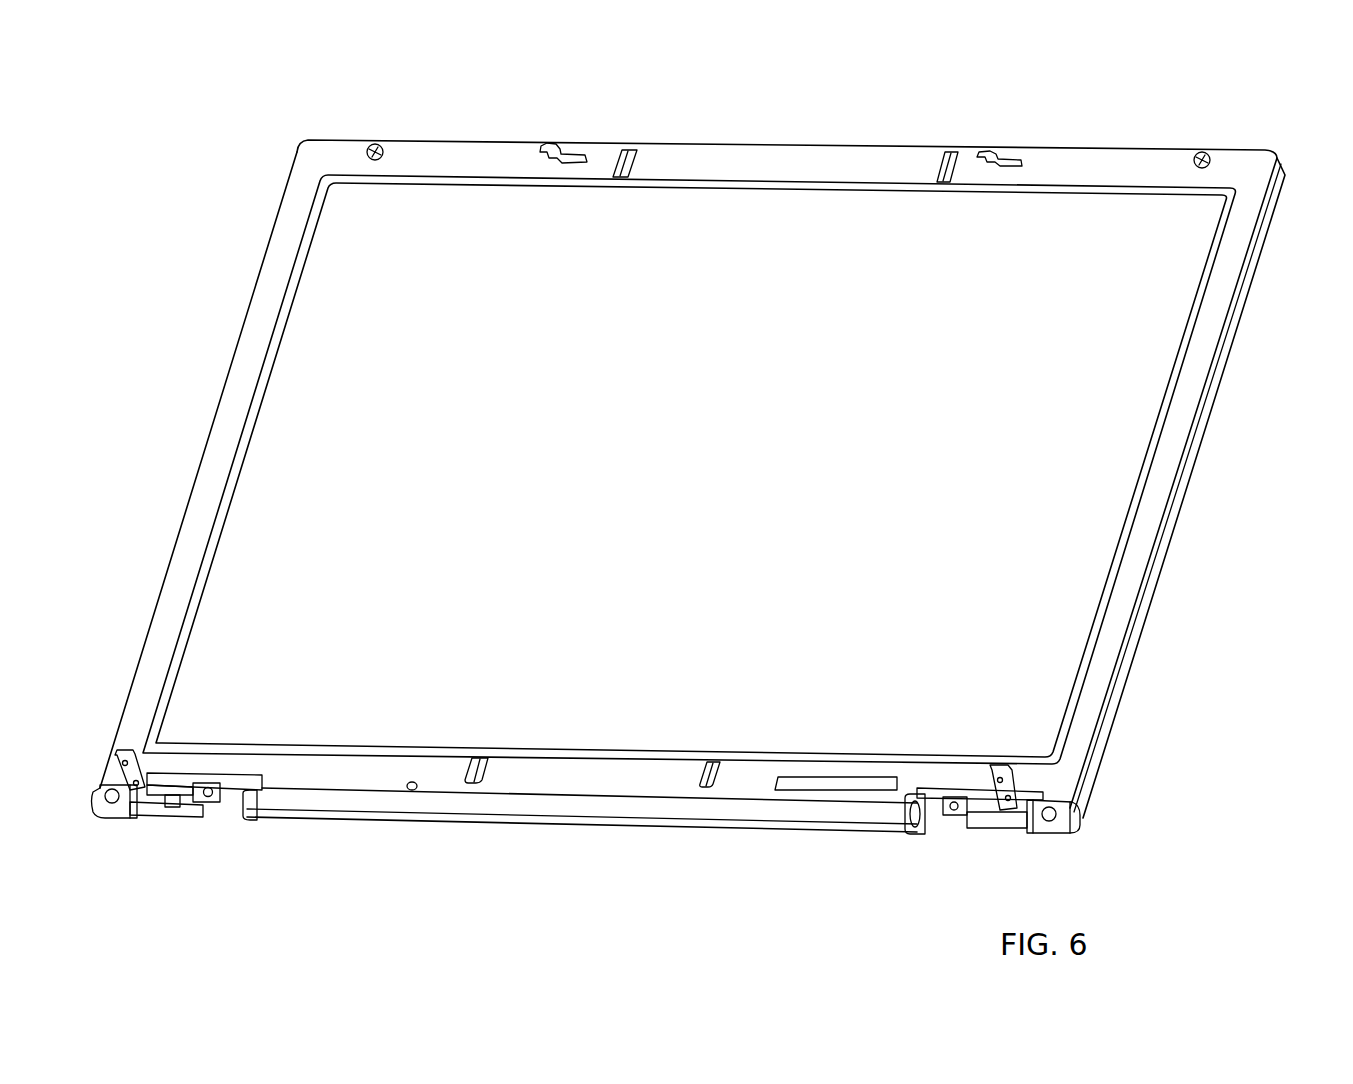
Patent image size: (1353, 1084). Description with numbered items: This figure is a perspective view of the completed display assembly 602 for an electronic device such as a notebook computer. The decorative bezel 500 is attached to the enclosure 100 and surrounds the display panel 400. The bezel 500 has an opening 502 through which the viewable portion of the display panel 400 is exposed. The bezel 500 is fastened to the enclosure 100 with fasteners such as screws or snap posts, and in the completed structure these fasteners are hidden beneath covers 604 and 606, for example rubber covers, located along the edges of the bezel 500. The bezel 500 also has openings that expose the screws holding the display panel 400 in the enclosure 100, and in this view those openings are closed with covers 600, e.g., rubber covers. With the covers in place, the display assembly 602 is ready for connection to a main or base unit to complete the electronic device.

The enclosure 100 is at (1285, 158).
The display panel 400 is at (815, 520).
The bezel 500 is at (1127, 583).
The opening 502 is at (1030, 673).
The covers 600 is at (716, 776).
The display assembly 602 is at (852, 118).
The cover 604 is at (380, 145).
The cover 606 is at (1060, 817).